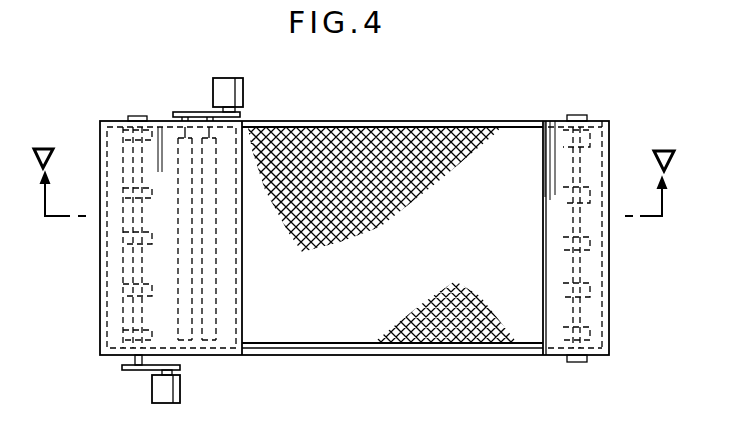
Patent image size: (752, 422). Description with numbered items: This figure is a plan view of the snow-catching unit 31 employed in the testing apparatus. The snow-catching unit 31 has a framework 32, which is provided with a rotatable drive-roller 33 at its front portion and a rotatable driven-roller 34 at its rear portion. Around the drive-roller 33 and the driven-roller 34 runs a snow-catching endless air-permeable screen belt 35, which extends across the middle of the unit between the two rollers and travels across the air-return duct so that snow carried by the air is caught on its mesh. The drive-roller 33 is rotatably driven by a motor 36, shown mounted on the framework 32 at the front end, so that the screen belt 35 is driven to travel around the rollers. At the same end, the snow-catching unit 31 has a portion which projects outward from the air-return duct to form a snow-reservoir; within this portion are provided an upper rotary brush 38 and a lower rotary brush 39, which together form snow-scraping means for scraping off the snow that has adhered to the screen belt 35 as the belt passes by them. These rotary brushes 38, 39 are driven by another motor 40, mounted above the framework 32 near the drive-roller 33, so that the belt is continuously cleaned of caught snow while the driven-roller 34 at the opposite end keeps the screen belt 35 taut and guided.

The snow-catching unit 31 is at (398, 118).
The framework 32 is at (455, 352).
The drive-roller 33 is at (113, 192).
The driven-roller 34 is at (600, 255).
The screen belt 35 is at (448, 143).
The motor 36 is at (180, 393).
The upper rotary brush 38 is at (217, 158).
The lower rotary brush 39 is at (182, 160).
The motor 40 is at (245, 83).